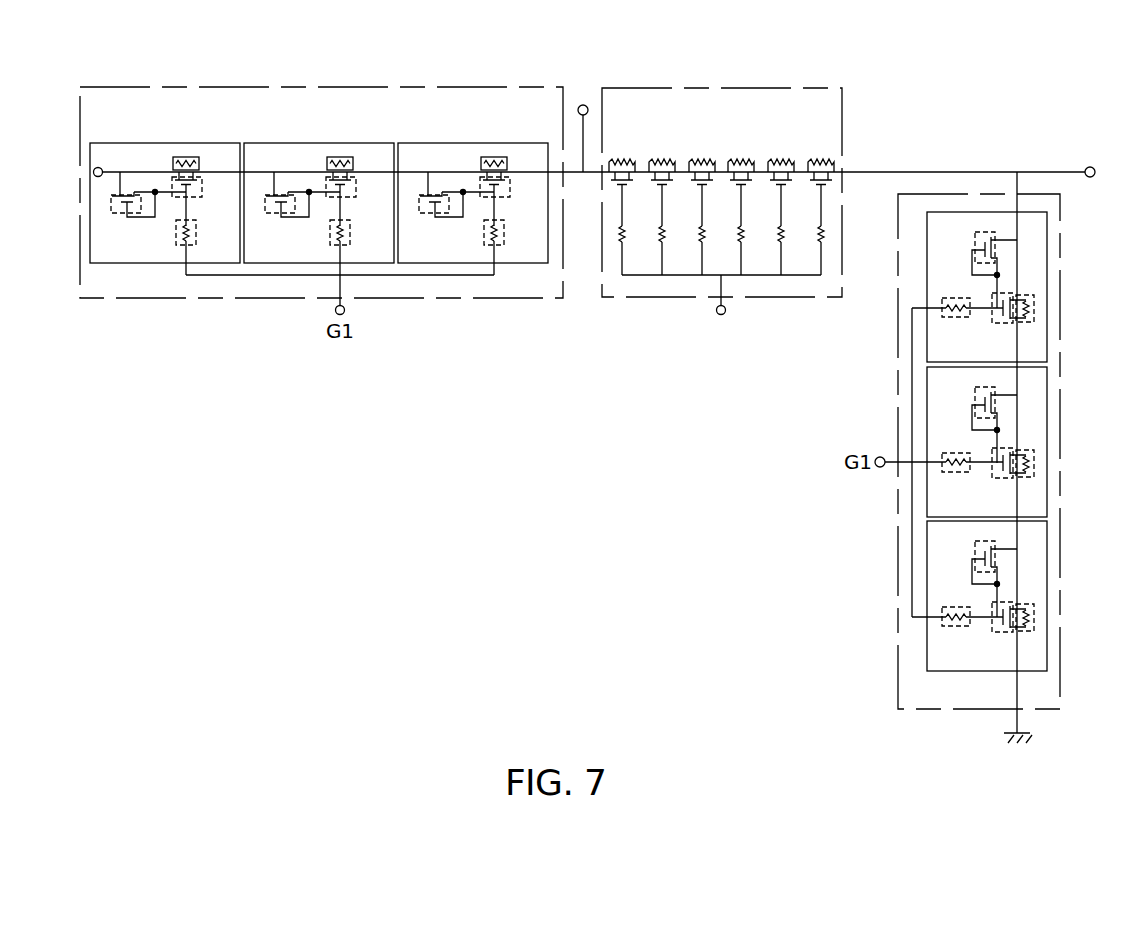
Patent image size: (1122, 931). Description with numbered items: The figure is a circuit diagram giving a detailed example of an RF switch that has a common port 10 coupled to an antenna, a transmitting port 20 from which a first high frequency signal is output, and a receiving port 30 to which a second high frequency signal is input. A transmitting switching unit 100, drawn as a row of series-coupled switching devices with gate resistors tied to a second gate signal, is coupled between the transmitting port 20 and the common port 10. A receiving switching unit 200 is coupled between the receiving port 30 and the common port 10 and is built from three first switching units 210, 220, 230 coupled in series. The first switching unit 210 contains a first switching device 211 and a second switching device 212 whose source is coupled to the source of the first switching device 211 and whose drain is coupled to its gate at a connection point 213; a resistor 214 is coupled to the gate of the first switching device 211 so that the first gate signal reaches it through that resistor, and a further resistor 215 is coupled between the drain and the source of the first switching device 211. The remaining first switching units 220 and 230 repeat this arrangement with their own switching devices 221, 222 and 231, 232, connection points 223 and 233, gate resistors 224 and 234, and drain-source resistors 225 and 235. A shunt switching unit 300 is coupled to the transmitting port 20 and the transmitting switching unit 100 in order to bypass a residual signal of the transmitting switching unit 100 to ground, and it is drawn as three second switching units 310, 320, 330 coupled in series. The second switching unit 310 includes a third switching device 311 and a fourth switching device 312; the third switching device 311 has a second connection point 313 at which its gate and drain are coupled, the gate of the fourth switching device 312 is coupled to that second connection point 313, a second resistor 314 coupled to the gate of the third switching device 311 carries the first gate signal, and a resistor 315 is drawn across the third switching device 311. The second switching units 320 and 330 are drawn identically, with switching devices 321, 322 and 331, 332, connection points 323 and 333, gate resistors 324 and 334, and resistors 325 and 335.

The common port 10 is at (583, 105).
The transmitting port 20 is at (1090, 167).
The receiving port 30 is at (93, 172).
The transmitting switching unit 100 is at (820, 88).
The receiving switching unit 200 is at (527, 87).
The first switching unit 210 is at (238, 143).
The first switching device 211 is at (201, 183).
The second switching device 212 is at (122, 214).
The node 213 is at (153, 189).
The resistor 214 is at (197, 234).
The resistor 215 is at (186, 156).
The first switching unit 220 is at (392, 143).
The first transistor 221 is at (355, 183).
The second transistor 222 is at (276, 214).
The node 223 is at (307, 189).
The first resistor 224 is at (351, 234).
The second resistor 225 is at (340, 156).
The first switching unit 230 is at (546, 143).
The first transistor 231 is at (509, 183).
The second transistor 232 is at (430, 214).
The node 233 is at (461, 189).
The first resistor 234 is at (505, 234).
The second resistor 235 is at (494, 156).
The shunt switching unit 300 is at (925, 194).
The second switching unit 310 is at (1047, 344).
The third switching device 311 is at (990, 322).
The fourth switching device 312 is at (975, 235).
The second connection point 313 is at (1000, 275).
The second resistor 314 is at (942, 312).
The parallel resistor 315 is at (1035, 308).
The second unit clamp circuit 320 is at (1047, 499).
The clamp transistor 321 is at (990, 477).
The diode-connected transistor 322 is at (975, 390).
The node 323 is at (1000, 430).
The gate resistor 324 is at (942, 457).
The parallel resistor 325 is at (1035, 463).
The third unit clamp circuit 330 is at (1047, 653).
The clamp transistor 331 is at (990, 631).
The diode-connected transistor 332 is at (975, 544).
The node 333 is at (1000, 584).
The gate resistor 334 is at (942, 621).
The parallel resistor 335 is at (1035, 617).